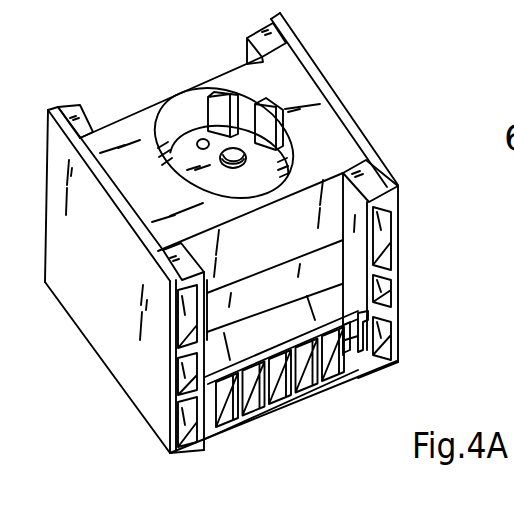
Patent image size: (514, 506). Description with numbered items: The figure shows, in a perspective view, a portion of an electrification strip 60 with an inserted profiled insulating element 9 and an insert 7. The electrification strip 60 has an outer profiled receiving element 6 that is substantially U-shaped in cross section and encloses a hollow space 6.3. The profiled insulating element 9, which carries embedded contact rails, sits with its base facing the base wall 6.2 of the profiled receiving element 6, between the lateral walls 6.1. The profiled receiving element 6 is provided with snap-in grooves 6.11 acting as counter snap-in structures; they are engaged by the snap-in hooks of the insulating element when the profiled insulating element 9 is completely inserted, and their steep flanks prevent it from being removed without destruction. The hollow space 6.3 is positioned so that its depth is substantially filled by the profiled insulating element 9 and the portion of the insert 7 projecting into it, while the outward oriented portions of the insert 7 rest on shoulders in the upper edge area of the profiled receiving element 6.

The profiled receiving element 6 is at (72, 327).
The lateral walls 6.1 is at (155, 417).
The base wall 6.2 is at (283, 418).
The hollow space 6.3 is at (121, 98).
The snap-in grooves 6.11 is at (393, 330).
The insert 7 is at (245, 76).
The profiled insulating element 9 is at (340, 378).
The electrification strip 60 is at (100, 389).